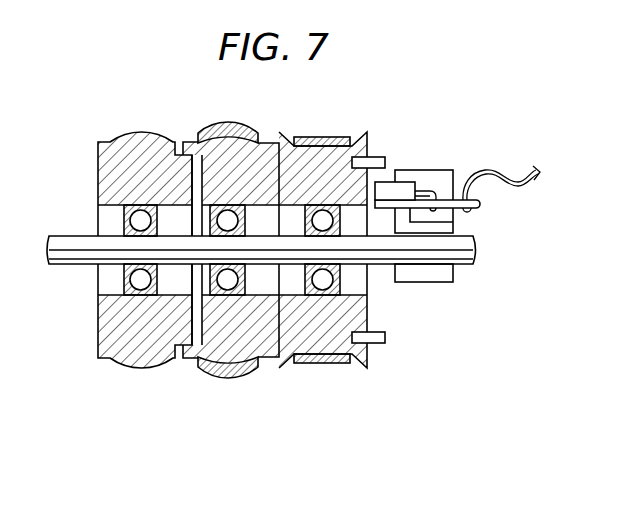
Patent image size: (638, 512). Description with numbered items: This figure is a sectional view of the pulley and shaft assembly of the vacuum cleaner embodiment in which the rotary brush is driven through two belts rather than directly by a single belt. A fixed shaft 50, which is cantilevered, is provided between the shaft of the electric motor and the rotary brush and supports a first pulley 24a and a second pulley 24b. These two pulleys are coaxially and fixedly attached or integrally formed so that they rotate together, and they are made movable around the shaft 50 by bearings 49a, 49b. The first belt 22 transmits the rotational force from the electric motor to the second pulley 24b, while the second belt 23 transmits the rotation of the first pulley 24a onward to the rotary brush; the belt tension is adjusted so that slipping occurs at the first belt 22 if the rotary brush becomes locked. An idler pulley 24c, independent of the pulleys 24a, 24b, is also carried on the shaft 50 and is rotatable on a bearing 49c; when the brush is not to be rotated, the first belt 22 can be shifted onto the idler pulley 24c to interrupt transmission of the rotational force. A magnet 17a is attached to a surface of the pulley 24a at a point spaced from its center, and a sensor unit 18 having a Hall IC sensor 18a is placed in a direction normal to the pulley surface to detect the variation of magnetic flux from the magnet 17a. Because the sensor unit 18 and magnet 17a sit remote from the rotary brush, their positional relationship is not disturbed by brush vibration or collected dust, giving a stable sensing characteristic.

The magnet 17a is at (377, 157).
The sensor unit 18 is at (440, 277).
The sensor 18a is at (403, 186).
The first belt 22 is at (233, 125).
The second belt 23 is at (318, 141).
The first pulley 24a is at (320, 333).
The second pulley 24b is at (220, 163).
The idler pulley 24c is at (118, 164).
The bearing 49a is at (330, 280).
The bearing 49b is at (226, 282).
The bearing 49c is at (142, 282).
The fixed shaft 50 is at (462, 265).